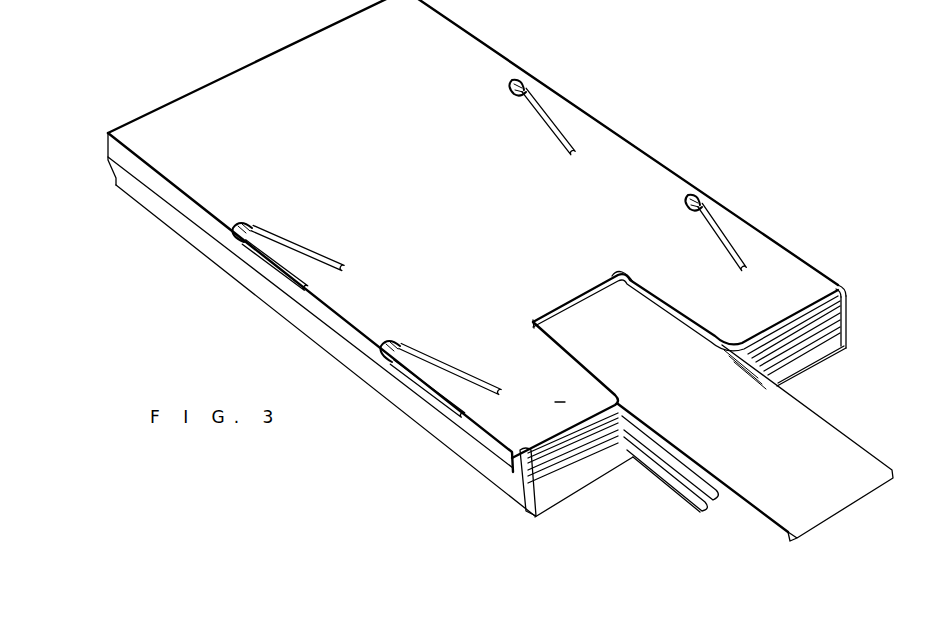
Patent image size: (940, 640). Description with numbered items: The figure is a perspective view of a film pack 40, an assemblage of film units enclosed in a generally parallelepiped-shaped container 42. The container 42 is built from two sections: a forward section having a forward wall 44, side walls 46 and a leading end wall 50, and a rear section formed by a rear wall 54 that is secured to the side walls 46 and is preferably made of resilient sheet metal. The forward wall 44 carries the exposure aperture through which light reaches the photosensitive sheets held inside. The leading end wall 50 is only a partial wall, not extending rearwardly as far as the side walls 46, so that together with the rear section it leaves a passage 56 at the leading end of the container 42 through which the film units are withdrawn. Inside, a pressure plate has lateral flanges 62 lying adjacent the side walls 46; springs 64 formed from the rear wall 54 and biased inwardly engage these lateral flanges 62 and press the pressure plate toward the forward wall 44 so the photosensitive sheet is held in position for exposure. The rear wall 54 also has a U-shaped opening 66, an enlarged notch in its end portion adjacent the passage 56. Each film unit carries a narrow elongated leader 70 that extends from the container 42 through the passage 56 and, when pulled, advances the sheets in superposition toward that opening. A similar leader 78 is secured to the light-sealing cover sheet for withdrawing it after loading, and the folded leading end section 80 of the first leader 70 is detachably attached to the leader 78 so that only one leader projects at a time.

The film pack 40 is at (662, 134).
The container 42 is at (838, 283).
The forward wall 44 is at (851, 312).
The side walls 46 is at (294, 326).
The leading end wall 50 is at (808, 358).
The rear wall 54 is at (462, 202).
The passage 56 is at (588, 472).
The lateral flanges 62 is at (254, 226).
The springs 64 is at (548, 98).
The U-shaped opening 66 is at (648, 291).
The leader 70 is at (646, 460).
The leader 78 is at (781, 466).
The leading end section 80 is at (691, 468).